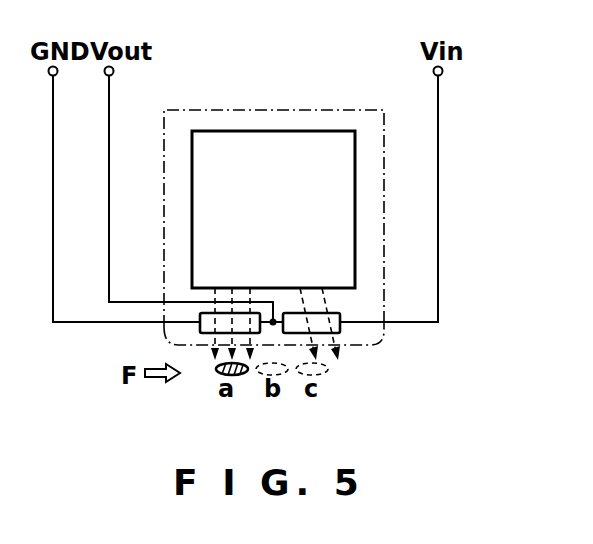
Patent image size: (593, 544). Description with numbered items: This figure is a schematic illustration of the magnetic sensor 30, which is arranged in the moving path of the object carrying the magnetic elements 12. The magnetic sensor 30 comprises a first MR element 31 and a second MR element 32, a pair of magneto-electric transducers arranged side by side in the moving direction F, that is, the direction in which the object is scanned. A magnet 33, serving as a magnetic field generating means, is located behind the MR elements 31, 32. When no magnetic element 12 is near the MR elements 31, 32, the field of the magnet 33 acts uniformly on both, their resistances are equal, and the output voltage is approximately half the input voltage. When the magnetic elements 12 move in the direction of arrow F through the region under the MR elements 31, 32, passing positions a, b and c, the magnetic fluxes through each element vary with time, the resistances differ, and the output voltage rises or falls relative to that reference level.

The magnetic element 12 is at (221, 378).
The magnetic sensor 30 is at (389, 262).
The first MR element 31 is at (200, 330).
The second MR element 32 is at (340, 329).
The magnet 33 is at (331, 131).